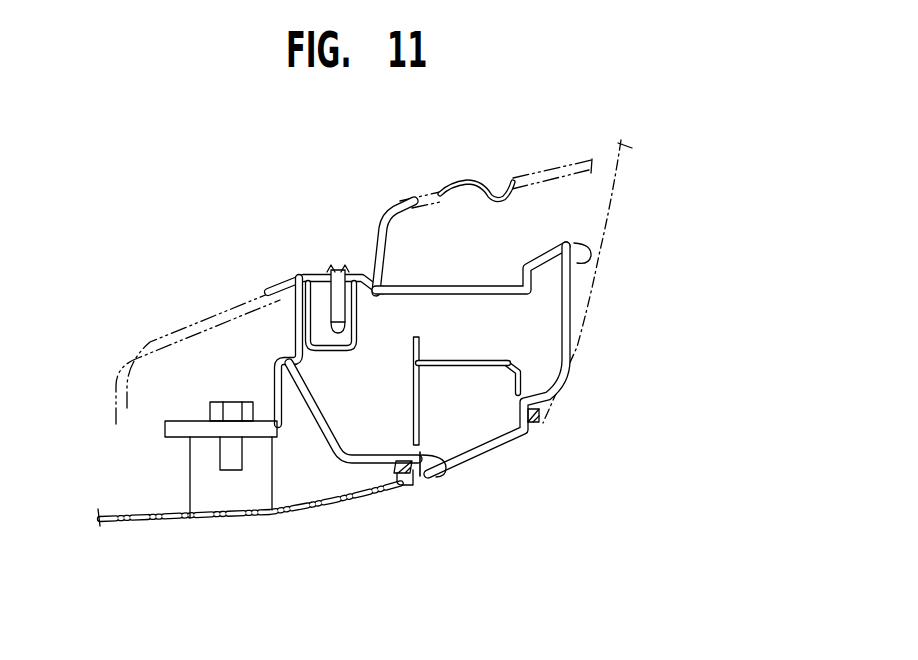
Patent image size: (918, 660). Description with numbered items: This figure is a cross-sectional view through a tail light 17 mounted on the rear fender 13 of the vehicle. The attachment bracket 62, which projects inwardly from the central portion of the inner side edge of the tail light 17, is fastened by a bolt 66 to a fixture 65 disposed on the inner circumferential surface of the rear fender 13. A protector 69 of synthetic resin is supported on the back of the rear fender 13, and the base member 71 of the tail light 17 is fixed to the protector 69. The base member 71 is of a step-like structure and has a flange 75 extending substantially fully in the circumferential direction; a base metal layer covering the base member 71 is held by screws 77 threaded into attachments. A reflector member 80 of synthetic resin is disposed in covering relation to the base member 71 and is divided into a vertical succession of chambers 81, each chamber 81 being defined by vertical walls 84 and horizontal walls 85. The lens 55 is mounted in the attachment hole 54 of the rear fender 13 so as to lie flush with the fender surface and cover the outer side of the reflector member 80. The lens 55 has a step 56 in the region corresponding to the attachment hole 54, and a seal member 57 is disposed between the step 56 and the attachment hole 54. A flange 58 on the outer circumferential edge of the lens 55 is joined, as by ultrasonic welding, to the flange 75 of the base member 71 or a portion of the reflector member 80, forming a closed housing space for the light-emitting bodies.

The rear fender 13 is at (624, 200).
The tail light 17 is at (668, 538).
The attachment hole 54 is at (417, 474).
The lens 55 is at (497, 453).
The step 56 is at (434, 466).
The seal member 57 is at (406, 470).
The flange 58 is at (291, 378).
The attachment bracket 62 is at (188, 420).
The fixture 65 is at (207, 480).
The bolt 66 is at (231, 401).
The protector 69 is at (507, 184).
The base member 71 is at (483, 286).
The flange 75 is at (292, 350).
The screw 77 is at (329, 267).
The reflector member 80 is at (445, 336).
The chamber 81 is at (470, 408).
The vertical wall 84 is at (412, 392).
The horizontal wall 85 is at (481, 360).